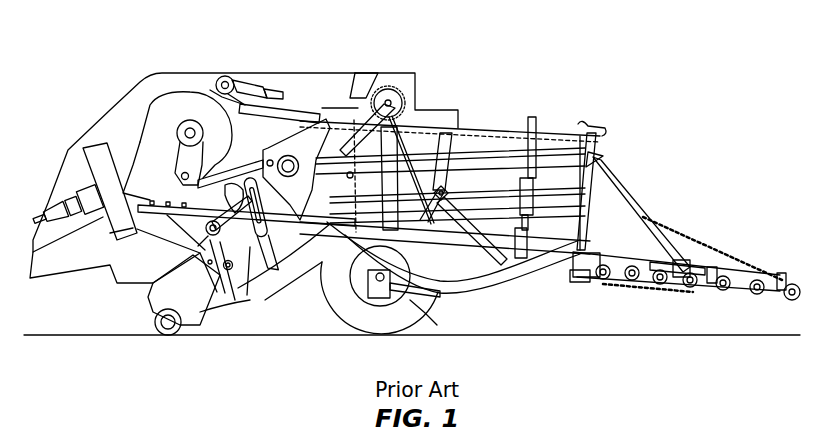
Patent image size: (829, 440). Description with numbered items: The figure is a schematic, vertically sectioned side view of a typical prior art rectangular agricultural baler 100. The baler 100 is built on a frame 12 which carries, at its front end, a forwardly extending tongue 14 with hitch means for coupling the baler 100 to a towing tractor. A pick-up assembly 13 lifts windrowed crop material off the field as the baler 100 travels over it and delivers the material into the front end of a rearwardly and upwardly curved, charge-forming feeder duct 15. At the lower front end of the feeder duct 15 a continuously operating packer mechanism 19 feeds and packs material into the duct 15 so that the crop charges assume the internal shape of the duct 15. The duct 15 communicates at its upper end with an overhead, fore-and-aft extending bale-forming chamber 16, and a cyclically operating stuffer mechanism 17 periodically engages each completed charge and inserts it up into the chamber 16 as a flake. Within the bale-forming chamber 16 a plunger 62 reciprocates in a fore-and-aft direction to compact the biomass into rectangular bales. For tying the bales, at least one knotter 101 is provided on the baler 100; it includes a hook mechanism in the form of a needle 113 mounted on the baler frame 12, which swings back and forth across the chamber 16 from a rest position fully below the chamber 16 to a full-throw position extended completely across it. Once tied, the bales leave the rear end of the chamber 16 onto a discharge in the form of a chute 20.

The agricultural baler 100 is at (440, 55).
The knotter 101 is at (370, 82).
The plunger 62 is at (304, 128).
The bale-forming chamber 16 is at (470, 158).
The chute 20 is at (729, 198).
The tongue 14 is at (72, 268).
The pick-up assembly 13 is at (192, 337).
The packer mechanism 19 is at (246, 270).
The stuffer mechanism 17 is at (259, 275).
The feeder duct 15 is at (288, 290).
The frame 12 is at (302, 235).
The needle 113 is at (427, 283).